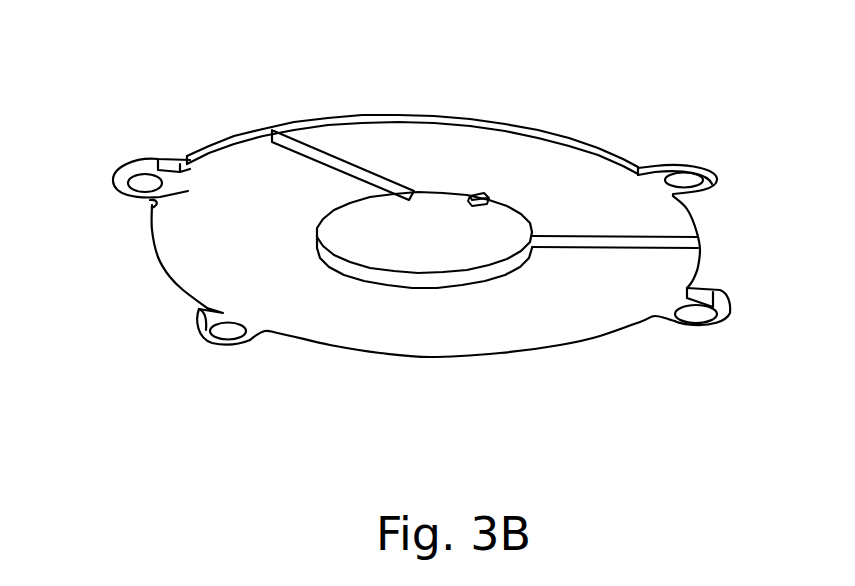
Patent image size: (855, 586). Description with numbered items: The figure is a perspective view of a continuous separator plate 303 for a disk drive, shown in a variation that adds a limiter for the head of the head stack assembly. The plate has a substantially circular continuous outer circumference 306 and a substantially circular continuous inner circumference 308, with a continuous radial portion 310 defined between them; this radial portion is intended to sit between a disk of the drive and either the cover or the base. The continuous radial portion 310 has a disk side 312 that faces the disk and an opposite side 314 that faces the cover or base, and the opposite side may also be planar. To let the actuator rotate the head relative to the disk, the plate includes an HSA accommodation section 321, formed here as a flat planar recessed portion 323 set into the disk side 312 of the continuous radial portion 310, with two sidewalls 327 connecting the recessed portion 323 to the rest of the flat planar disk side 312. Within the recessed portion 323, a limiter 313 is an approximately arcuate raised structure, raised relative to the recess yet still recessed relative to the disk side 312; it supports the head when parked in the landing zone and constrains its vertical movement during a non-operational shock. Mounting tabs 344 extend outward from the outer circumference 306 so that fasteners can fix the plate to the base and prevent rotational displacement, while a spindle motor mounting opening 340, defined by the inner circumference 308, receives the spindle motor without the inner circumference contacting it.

The continuous separator plate 303 is at (86, 112).
The substantially circular continuous outer circumference 306 is at (544, 110).
The substantially circular continuous inner circumference 308 is at (428, 270).
The continuous radial portion 310 is at (440, 336).
The disk side 312 is at (549, 323).
The limiter 313 is at (487, 172).
The opposite side 314 is at (268, 126).
The HSA accommodation section 321 is at (575, 170).
The recessed portion 323 is at (404, 143).
The sidewalls 327 is at (612, 249).
The spindle motor mounting opening 340 is at (395, 239).
The mounting tabs 344 is at (700, 146).